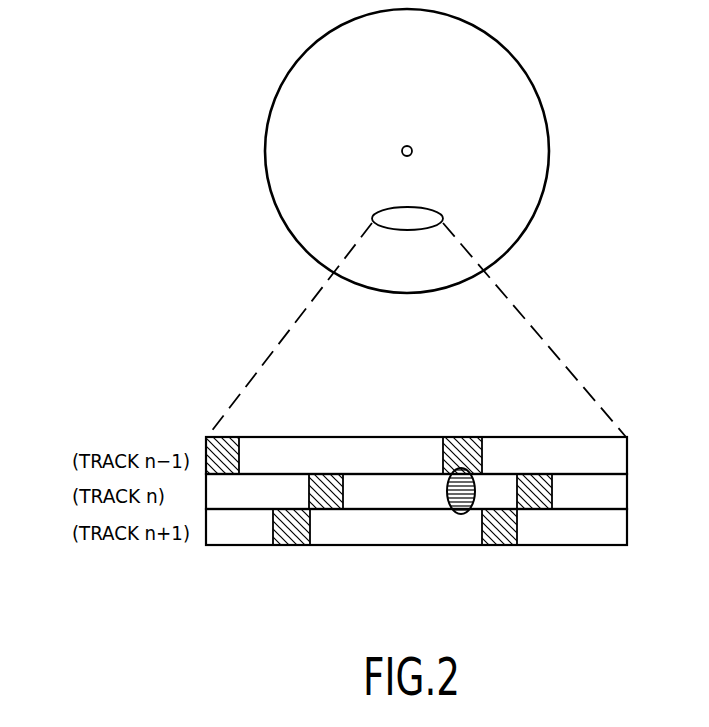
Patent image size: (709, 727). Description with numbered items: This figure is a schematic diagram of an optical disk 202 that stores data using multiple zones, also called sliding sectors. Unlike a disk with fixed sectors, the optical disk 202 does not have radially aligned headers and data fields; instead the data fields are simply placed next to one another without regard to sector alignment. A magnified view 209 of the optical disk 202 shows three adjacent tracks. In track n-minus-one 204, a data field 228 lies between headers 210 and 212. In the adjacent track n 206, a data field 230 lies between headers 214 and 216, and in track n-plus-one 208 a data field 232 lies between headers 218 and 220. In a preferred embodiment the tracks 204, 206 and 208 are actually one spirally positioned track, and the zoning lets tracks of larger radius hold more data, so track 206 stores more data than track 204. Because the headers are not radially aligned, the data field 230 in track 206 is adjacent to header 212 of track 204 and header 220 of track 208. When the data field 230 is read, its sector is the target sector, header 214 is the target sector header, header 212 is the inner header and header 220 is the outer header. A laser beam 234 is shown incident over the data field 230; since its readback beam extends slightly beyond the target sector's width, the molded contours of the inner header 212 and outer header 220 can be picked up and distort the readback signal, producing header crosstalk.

The optical disk 202 is at (537, 87).
The magnified view 209 is at (412, 229).
The track (n−1) 204 is at (627, 455).
The track (n) 206 is at (627, 497).
The track (n+1) 208 is at (627, 532).
The header 210 is at (235, 437).
The header 212 is at (458, 441).
The header 214 is at (325, 502).
The header 216 is at (540, 503).
The header 218 is at (290, 533).
The header 220 is at (502, 535).
The data field 228 is at (423, 441).
The data field 230 is at (432, 496).
The data field 232 is at (407, 532).
The laser beam 234 is at (478, 486).